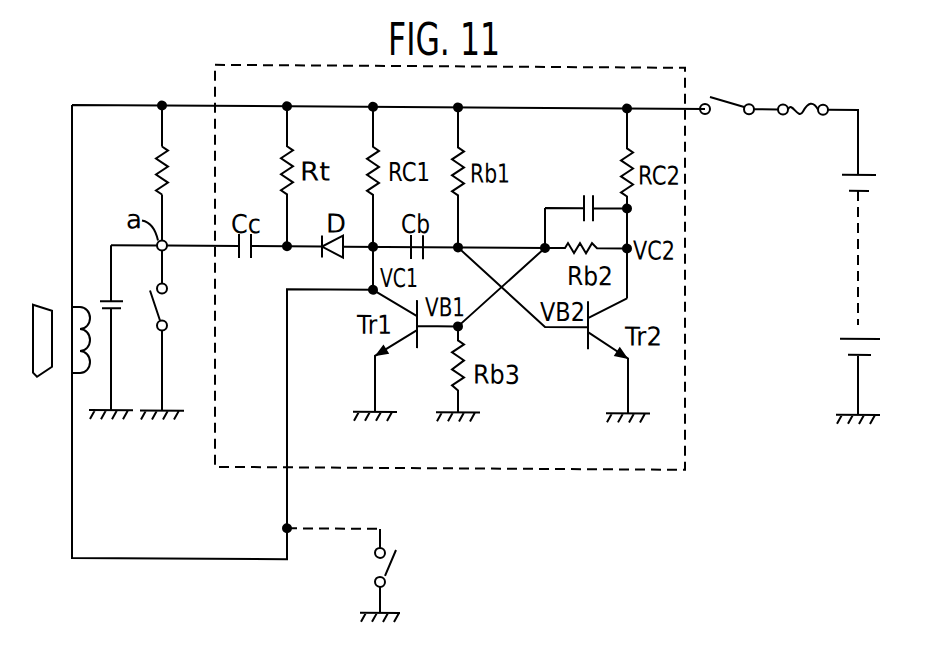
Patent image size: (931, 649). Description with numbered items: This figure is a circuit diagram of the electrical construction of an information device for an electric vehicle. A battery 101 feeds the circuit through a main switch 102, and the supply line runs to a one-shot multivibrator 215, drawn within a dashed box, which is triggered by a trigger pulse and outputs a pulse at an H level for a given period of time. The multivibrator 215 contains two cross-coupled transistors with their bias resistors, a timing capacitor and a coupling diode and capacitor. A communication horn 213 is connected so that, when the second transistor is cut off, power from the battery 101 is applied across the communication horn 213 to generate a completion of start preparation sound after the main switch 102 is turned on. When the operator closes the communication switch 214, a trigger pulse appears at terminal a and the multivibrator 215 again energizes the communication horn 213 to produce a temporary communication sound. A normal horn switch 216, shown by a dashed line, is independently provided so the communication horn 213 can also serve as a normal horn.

The battery 101 is at (858, 192).
The main switch 102 is at (748, 112).
The communication horn 213 is at (49, 300).
The communication switch 214 is at (166, 330).
The one-shot multivibrator 215 is at (618, 64).
The normal horn switch 216 is at (388, 566).